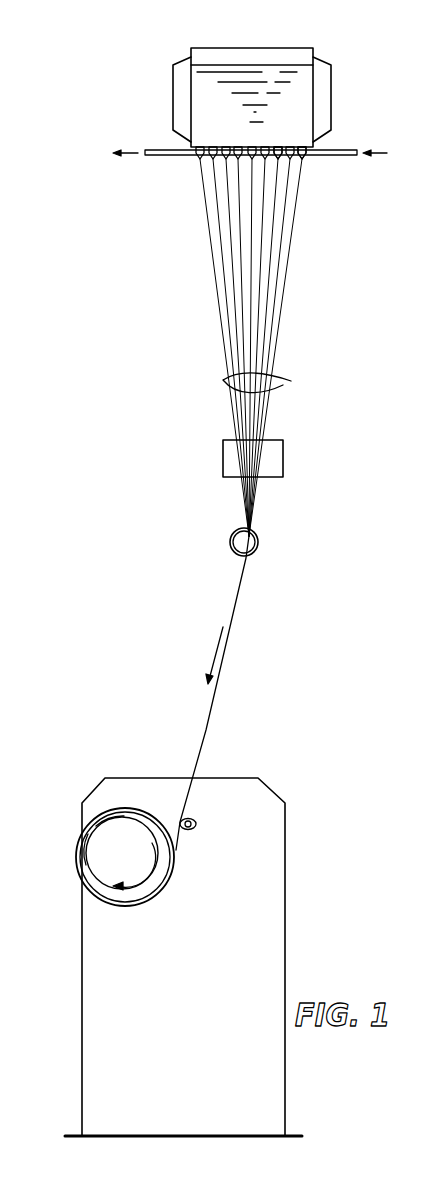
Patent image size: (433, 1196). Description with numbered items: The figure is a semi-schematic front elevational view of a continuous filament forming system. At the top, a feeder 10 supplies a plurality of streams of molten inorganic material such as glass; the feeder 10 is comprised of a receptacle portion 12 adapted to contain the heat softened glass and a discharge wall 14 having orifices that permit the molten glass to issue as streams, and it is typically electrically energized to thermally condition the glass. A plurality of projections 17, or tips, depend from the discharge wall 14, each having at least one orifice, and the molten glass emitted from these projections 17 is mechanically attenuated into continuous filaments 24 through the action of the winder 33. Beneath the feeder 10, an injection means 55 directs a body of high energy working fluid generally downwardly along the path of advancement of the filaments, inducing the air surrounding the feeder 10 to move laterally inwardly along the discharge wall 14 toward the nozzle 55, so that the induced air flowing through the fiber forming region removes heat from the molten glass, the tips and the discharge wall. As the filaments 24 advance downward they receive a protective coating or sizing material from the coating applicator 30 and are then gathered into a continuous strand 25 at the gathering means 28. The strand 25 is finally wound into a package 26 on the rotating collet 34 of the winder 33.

The feeder 10 is at (224, 44).
The receptacle portion 12 is at (291, 102).
The discharge wall 14 is at (236, 159).
The projections 17 is at (306, 159).
The injection means 55 is at (342, 143).
The continuous filaments 24 is at (271, 382).
The coating applicator 30 is at (280, 440).
The gathering means 28 is at (232, 532).
The continuous strand 25 is at (240, 580).
The winder 33 is at (98, 774).
The package 26 is at (78, 863).
The rotating collet 34 is at (105, 885).